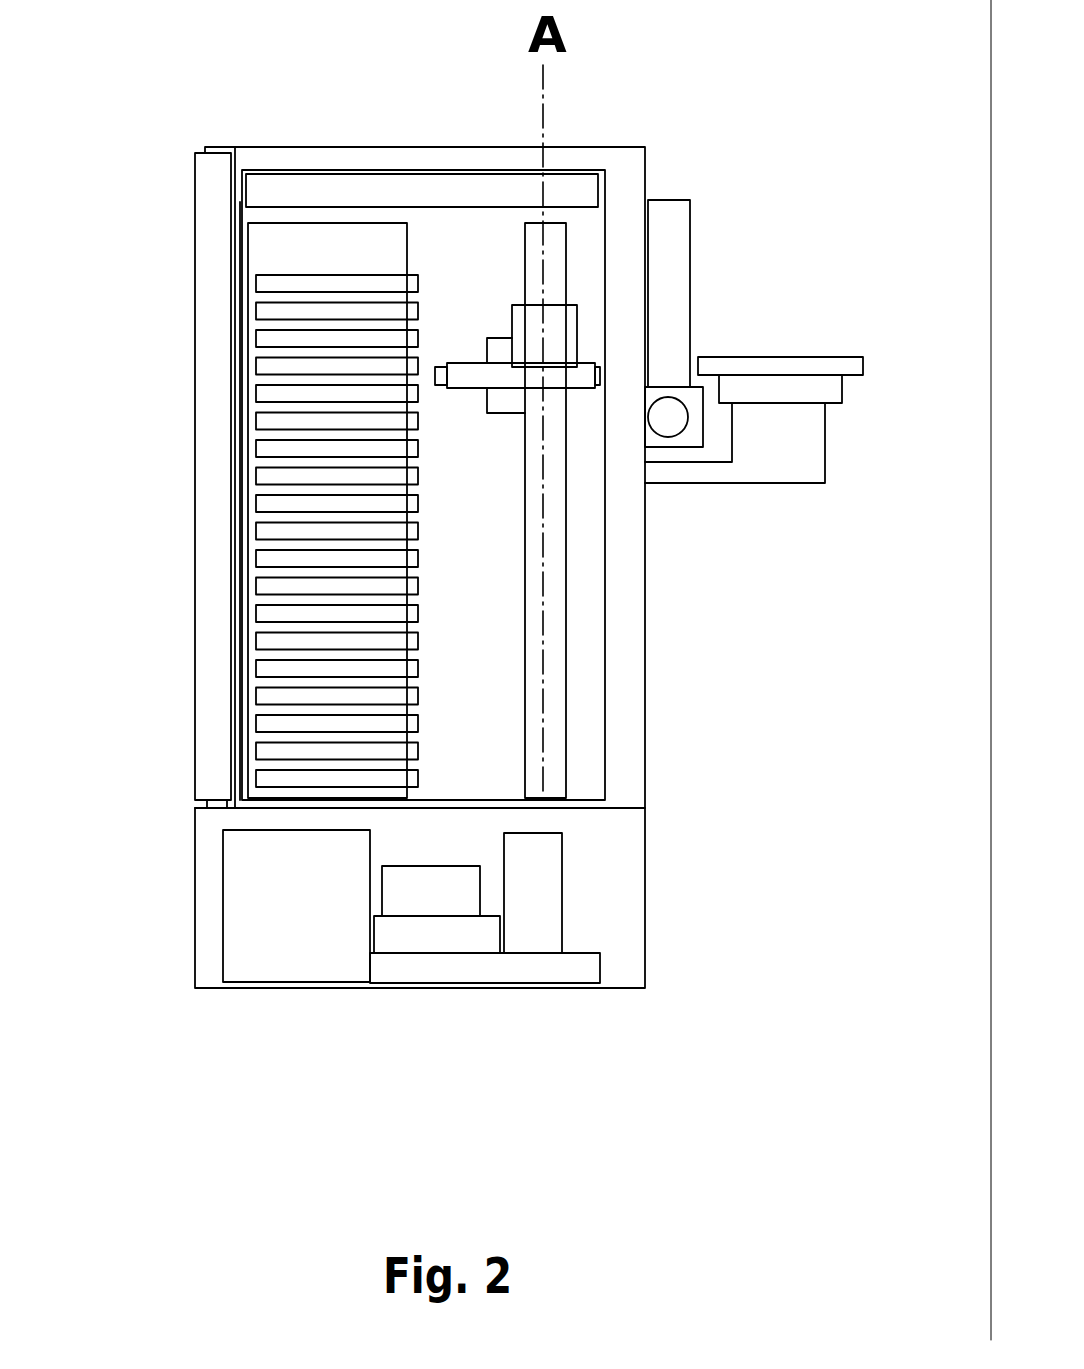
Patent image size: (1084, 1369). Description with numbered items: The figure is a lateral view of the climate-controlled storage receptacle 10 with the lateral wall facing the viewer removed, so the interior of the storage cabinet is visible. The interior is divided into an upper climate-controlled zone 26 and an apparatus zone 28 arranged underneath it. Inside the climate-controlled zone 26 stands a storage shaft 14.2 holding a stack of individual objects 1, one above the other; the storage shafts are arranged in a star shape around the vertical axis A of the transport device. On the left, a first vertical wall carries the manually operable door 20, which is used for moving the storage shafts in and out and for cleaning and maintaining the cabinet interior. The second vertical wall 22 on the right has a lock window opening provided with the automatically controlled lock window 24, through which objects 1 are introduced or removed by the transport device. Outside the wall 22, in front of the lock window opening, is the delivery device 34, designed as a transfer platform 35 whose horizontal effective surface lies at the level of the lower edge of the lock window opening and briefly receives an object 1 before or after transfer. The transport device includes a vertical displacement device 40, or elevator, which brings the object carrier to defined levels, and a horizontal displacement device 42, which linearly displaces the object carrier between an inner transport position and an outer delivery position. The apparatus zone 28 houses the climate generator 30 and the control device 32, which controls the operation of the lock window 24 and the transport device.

The storage receptacle 10 is at (900, 1011).
The second vertical wall 22 is at (623, 743).
The door 20 is at (210, 592).
The storage shaft 14.2 is at (320, 247).
The object 1 is at (263, 690).
The climate-controlled zone 26 is at (475, 668).
The vertical displacement device 40 is at (522, 317).
The horizontal displacement device 42 is at (456, 378).
The lock window 24 is at (668, 218).
The transfer platform 35 is at (777, 367).
The delivery device 34 is at (836, 445).
The apparatus zone 28 is at (602, 887).
The control device 32 is at (297, 958).
The climate generator 30 is at (540, 932).